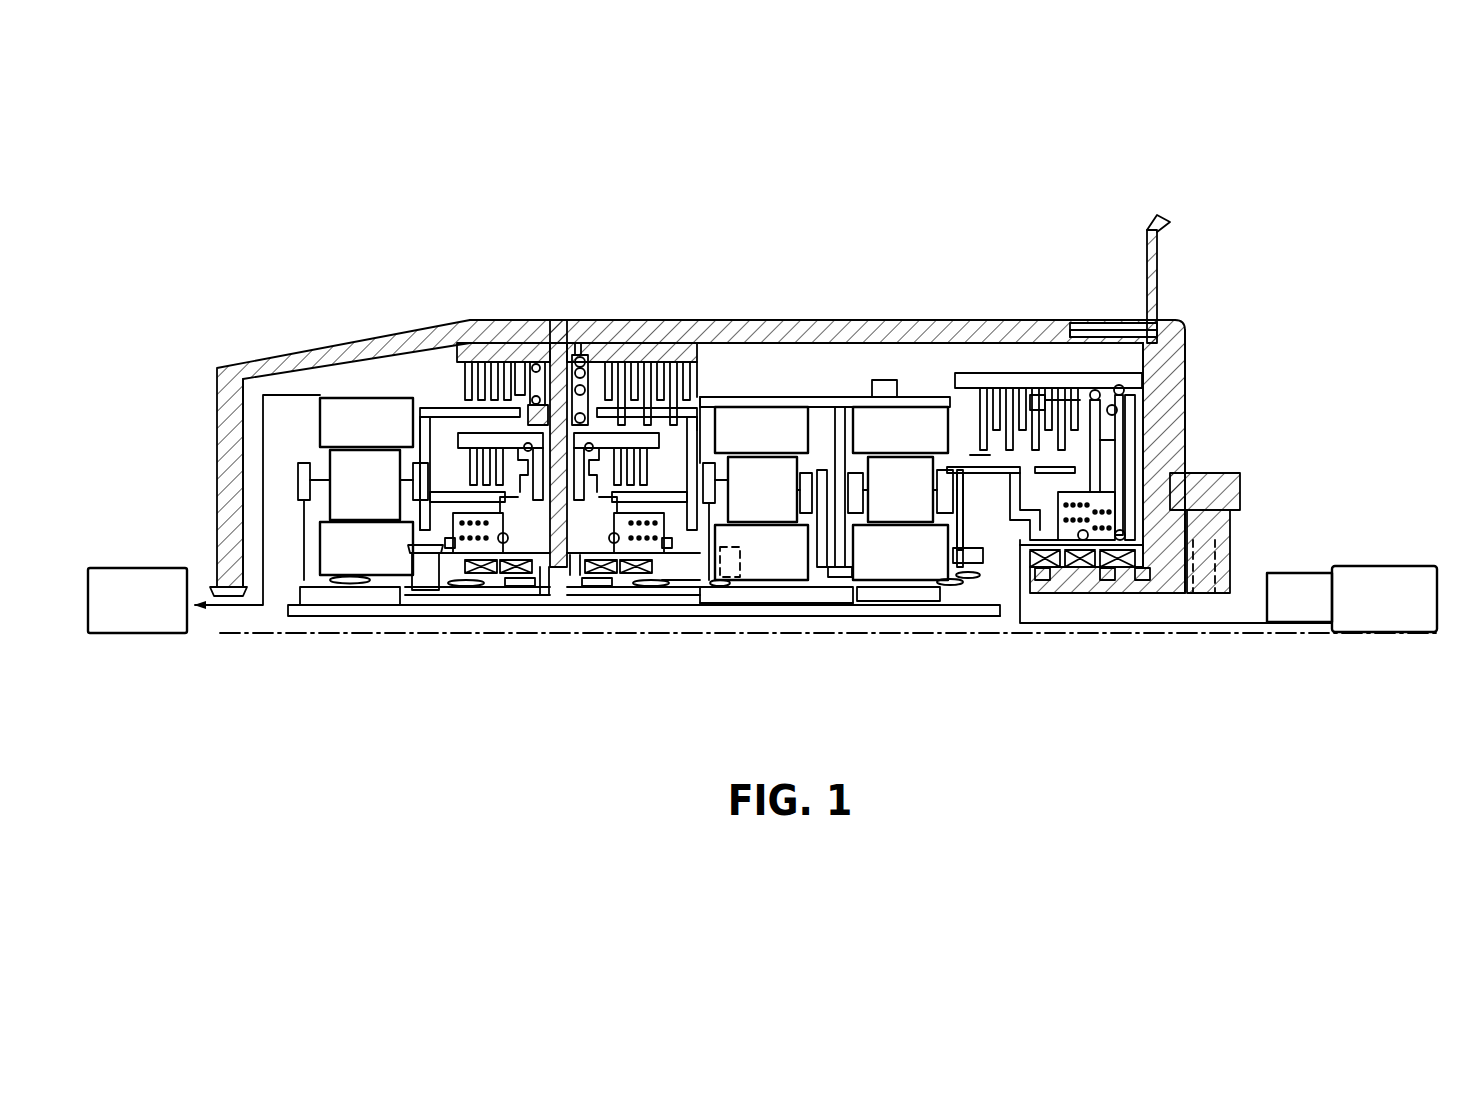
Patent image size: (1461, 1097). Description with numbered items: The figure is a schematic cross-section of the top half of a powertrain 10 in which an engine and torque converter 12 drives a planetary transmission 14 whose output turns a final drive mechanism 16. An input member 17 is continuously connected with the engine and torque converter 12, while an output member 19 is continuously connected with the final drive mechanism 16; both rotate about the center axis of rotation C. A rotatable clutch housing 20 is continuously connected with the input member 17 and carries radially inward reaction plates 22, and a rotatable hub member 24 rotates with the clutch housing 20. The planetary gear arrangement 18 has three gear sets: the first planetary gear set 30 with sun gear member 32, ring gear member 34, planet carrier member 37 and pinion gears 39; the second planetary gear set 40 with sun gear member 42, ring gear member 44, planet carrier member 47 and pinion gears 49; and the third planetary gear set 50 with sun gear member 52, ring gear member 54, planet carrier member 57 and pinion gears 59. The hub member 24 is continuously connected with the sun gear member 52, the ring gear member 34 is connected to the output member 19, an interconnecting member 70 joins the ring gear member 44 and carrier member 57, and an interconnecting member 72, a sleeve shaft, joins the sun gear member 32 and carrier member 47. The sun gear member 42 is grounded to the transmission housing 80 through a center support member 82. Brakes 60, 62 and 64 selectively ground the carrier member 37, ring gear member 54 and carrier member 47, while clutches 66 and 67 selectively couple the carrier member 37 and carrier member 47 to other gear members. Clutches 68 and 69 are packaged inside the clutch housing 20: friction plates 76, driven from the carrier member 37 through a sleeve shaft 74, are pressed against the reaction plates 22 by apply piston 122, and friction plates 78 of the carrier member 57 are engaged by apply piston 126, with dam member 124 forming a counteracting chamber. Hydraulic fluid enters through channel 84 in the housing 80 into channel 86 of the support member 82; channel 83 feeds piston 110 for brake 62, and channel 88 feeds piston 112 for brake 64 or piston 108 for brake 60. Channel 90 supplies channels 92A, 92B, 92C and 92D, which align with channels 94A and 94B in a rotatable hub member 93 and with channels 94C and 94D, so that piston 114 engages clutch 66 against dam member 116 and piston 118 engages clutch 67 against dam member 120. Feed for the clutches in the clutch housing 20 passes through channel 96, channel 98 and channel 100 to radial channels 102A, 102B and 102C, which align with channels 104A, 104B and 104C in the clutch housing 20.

The powertrain 10 is at (897, 270).
The engine and torque converter 12 is at (1303, 497).
The planetary transmission 14 is at (746, 268).
The final drive mechanism 16 is at (140, 562).
The input member 17 is at (1268, 627).
The planetary gear arrangement 18 is at (865, 228).
The output member 19 is at (230, 632).
The rotatable clutch housing 20 is at (1010, 395).
The reaction plates 22 is at (985, 400).
The rotatable hub member 24 is at (1020, 505).
The first planetary gear set 30 is at (632, 531).
The sun gear member 32 is at (366, 548).
The ring gear member 34 is at (366, 422).
The planet carrier member 37 is at (320, 462).
The pinion gears 39 is at (365, 485).
The second planetary gear set 40 is at (825, 543).
The sun gear member 42 is at (775, 594).
The ring gear member 44 is at (761, 430).
The planet carrier member 47 is at (841, 463).
The pinion gears 49 is at (762, 489).
The third planetary gear set 50 is at (905, 548).
The sun gear member 52 is at (898, 592).
The ring gear member 54 is at (900, 430).
The planet carrier member 57 is at (873, 487).
The pinion gears 59 is at (900, 489).
The brake 60 is at (448, 375).
The brake 62 is at (700, 448).
The brake 64 is at (702, 380).
The clutch 66 is at (455, 455).
The clutch 67 is at (662, 407).
The clutch 68 is at (1100, 420).
The clutch 69 is at (968, 422).
The interconnecting member 70 is at (867, 487).
The interconnecting member 72 is at (735, 596).
The sleeve shaft 74 is at (758, 618).
The friction plates 76 is at (1090, 397).
The friction plates 78 is at (992, 455).
The transmission housing 80 is at (740, 340).
The center support member 82 is at (575, 360).
The channel 83 is at (577, 375).
The channel 84 is at (573, 345).
The channel 86 is at (553, 380).
The channel 88 is at (580, 400).
The channel 90 is at (585, 577).
The channel 92A is at (470, 575).
The channel 92B is at (503, 575).
The channel 92C is at (600, 575).
The channel 92D is at (640, 575).
The rotatable hub member 93 is at (549, 596).
The channel 94A is at (448, 582).
The channel 94B is at (485, 588).
The channel 94C is at (618, 588).
The channel 94D is at (662, 588).
The channel 96 is at (1080, 330).
The channel 98 is at (1108, 440).
The channel 100 is at (1074, 598).
The channel 102A is at (1035, 578).
The channel 102B is at (1068, 578).
The channel 102C is at (1098, 578).
The channel 104A is at (1050, 592).
The channel 104B is at (1112, 593).
The channel 104C is at (1150, 595).
The piston 108 is at (530, 350).
The piston 110 is at (630, 345).
The piston 112 is at (662, 574).
The piston 114 is at (522, 582).
The dam member 116 is at (441, 554).
The piston 118 is at (570, 560).
The dam member 120 is at (660, 582).
The apply piston 122 is at (1148, 460).
The dam member 124 is at (1090, 480).
The apply piston 126 is at (1150, 410).
The center axis of rotation C is at (1292, 640).